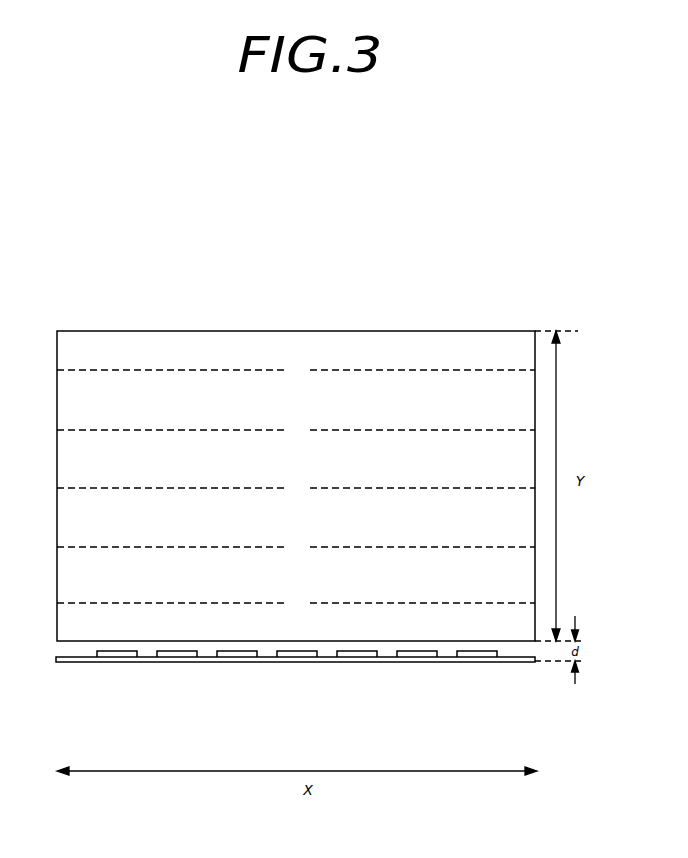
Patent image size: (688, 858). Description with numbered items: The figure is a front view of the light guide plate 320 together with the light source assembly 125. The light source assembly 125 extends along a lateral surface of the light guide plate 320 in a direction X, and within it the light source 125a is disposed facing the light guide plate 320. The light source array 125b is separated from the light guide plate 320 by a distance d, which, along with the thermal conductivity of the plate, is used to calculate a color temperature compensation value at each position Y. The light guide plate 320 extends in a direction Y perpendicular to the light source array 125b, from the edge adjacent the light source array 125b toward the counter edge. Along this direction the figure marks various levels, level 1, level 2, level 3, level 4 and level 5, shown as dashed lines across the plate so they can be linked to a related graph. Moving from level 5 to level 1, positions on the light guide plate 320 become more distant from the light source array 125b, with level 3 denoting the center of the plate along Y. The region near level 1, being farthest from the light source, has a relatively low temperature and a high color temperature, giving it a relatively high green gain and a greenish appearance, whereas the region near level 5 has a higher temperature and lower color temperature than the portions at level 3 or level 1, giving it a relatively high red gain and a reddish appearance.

The light guide plate 320 is at (452, 330).
The level 1 is at (296, 370).
The level 2 is at (296, 430).
The level 3 is at (296, 488).
The level 4 is at (296, 547).
The level 5 is at (296, 603).
The light source assembly 125 is at (295, 703).
The light source 125a is at (511, 663).
The light source array 125b is at (474, 658).